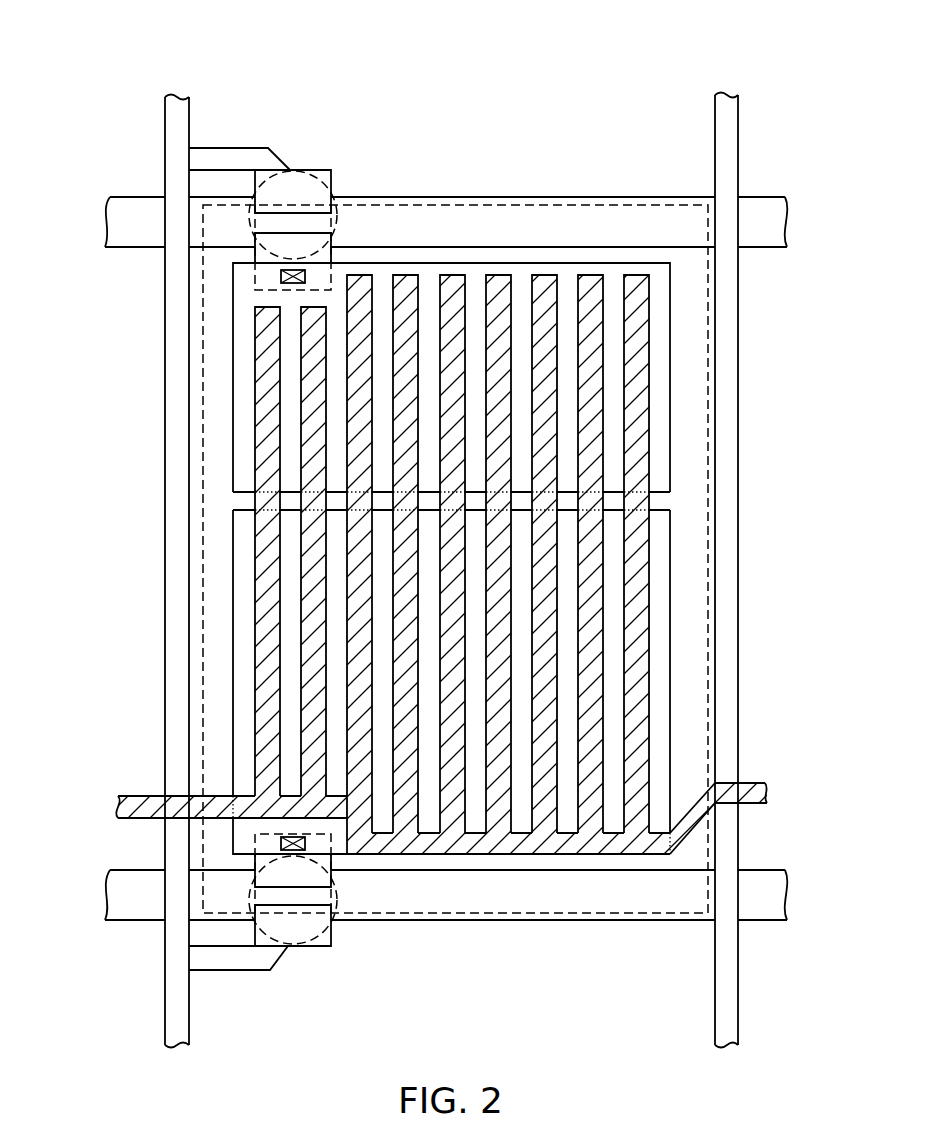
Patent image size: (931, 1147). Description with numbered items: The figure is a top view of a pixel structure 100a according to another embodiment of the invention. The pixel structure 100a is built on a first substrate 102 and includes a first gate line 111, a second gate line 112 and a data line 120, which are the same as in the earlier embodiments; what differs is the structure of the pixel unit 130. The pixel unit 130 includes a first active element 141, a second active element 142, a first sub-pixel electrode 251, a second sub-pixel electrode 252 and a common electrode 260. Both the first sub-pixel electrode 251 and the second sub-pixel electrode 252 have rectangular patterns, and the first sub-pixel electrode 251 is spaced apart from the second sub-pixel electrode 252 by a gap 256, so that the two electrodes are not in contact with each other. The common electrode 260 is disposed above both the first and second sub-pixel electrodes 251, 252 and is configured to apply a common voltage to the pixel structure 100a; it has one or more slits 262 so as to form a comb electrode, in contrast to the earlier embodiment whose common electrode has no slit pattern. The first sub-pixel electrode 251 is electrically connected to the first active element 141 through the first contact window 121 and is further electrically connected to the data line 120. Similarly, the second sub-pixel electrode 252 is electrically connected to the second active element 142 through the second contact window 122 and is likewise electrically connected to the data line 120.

The pixel structure 100a is at (108, 45).
The first substrate 102 is at (112, 597).
The first gate line 111 is at (125, 225).
The second gate line 112 is at (120, 898).
The data line 120 is at (175, 110).
The first contact window 121 is at (281, 277).
The second contact window 122 is at (281, 843).
The pixel unit 130 is at (582, 203).
The first active element 141 is at (327, 175).
The second active element 142 is at (318, 944).
The first sub-pixel electrode 251 is at (233, 414).
The second sub-pixel electrode 252 is at (233, 665).
The gap 256 is at (233, 500).
The common electrode 260 is at (127, 805).
The slits 262 is at (568, 585).